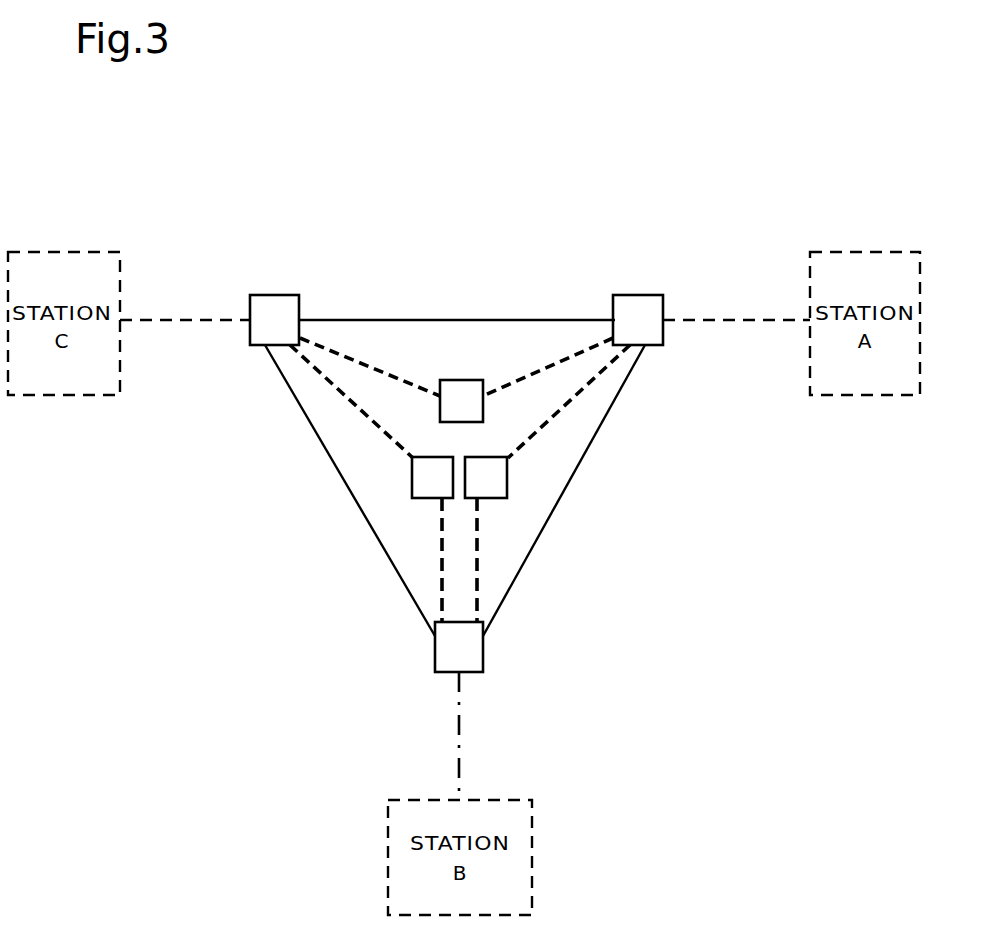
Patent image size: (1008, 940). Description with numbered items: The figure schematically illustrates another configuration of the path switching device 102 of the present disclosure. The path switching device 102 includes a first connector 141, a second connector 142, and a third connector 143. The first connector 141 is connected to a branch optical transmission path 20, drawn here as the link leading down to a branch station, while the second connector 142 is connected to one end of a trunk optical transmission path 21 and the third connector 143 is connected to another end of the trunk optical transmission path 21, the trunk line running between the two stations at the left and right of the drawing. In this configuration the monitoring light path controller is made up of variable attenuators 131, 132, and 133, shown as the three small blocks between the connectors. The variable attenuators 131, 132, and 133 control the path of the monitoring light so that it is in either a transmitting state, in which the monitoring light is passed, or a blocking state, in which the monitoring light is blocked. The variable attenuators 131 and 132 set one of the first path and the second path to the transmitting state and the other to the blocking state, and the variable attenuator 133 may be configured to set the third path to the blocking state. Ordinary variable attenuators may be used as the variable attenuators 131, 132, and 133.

The path switching device 102 is at (475, 226).
The third connector 143 is at (278, 294).
The second connector 142 is at (643, 294).
The first connector 141 is at (484, 652).
The variable attenuator 133 is at (457, 380).
The variable attenuator 132 is at (412, 481).
The variable attenuator 131 is at (507, 481).
The trunk optical transmission path 21 is at (163, 318).
The branch optical transmission path 20 is at (463, 731).